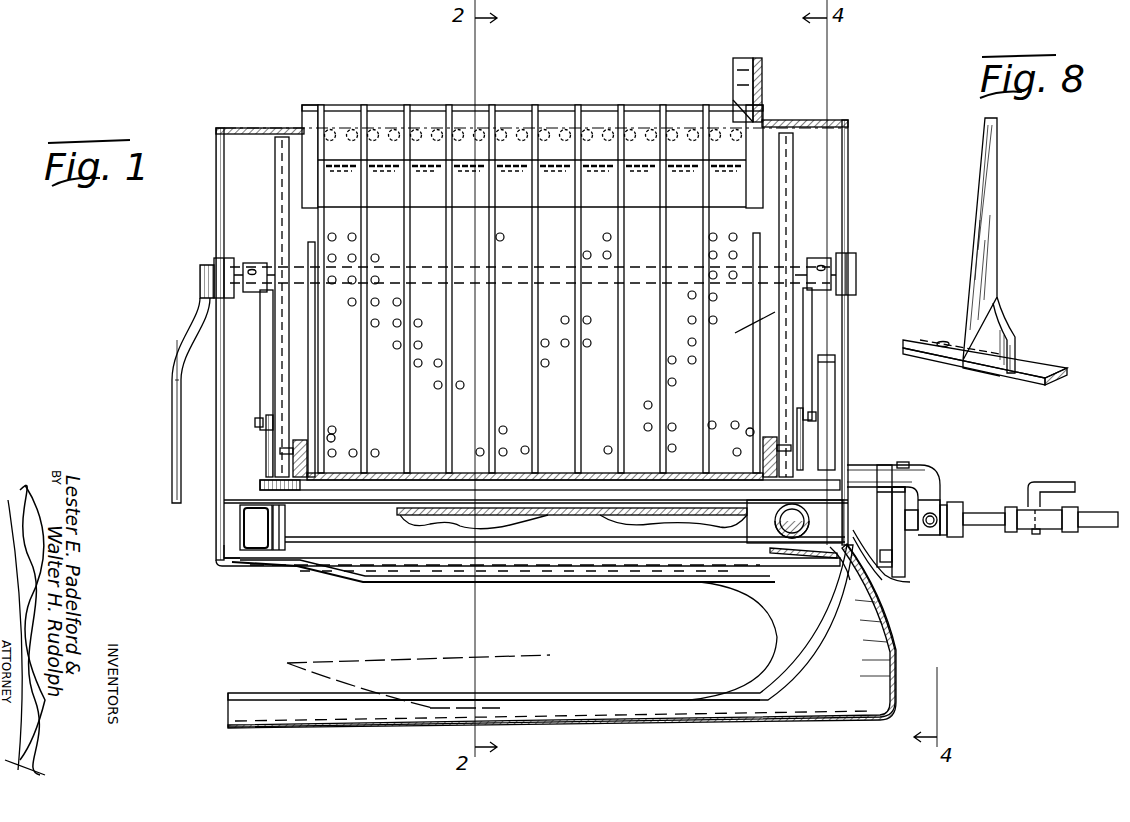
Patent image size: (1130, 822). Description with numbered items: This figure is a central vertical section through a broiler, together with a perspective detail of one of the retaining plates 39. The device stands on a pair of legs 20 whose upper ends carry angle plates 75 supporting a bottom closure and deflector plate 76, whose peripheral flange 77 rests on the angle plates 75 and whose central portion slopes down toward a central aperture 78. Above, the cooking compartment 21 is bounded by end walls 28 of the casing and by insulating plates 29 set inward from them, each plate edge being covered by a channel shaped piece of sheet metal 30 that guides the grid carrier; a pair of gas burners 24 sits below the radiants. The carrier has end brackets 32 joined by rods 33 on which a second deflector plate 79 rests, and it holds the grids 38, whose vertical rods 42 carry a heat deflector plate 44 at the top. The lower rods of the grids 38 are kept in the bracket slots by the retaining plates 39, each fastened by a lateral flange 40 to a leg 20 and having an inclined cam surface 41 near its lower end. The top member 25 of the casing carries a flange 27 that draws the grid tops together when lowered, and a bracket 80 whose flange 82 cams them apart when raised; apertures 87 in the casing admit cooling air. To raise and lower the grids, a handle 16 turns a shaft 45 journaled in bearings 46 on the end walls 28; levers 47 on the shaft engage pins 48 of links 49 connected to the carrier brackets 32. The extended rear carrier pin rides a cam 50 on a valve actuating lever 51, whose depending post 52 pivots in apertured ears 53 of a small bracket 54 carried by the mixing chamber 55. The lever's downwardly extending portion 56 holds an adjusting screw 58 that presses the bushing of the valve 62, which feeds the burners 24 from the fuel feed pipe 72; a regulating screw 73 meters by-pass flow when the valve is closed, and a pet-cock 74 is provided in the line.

In FIG. 1, the handle 16 is at (177, 358).
In FIG. 1, the legs 20 is at (897, 655).
In FIG. 1, the cooking compartment 21 is at (775, 312).
In FIG. 1, the gas burners 24 is at (572, 520).
In FIG. 1, the top member 25 is at (258, 128).
In FIG. 1, the flange 27 is at (644, 207).
In FIG. 1, the ends 28 is at (216, 206).
In FIG. 1, the plates 29 is at (280, 163).
In FIG. 1, the channel shaped piece of sheet metal 30 is at (275, 192).
In FIG. 1, the end brackets 32 is at (300, 440).
In FIG. 1, the rods 33 is at (552, 480).
In FIG. 1, the grids 38 is at (522, 94).
In FIG. 1, the retaining plates 39 is at (315, 330).
In FIG. 8, the retaining plates 39 is at (988, 210).
In FIG. 1, the lateral flange 40 is at (290, 503).
In FIG. 8, the lateral flange 40 is at (1050, 362).
In FIG. 1, the inclined cam surface 41 is at (748, 433).
In FIG. 8, the inclined cam surface 41 is at (1005, 318).
In FIG. 1, the vertical rods 42 is at (540, 312).
In FIG. 1, the heat deflector plate 44 is at (608, 90).
In FIG. 1, the shaft 45 is at (240, 270).
In FIG. 1, the bearings 46 is at (218, 263).
In FIG. 1, the levers 47 is at (262, 320).
In FIG. 1, the pin 48 is at (258, 418).
In FIG. 1, the link 49 is at (266, 440).
In FIG. 1, the cam 50 is at (835, 378).
In FIG. 1, the valve actuating lever 51 is at (918, 473).
In FIG. 1, the depending post 52 is at (893, 537).
In FIG. 1, the apertured ears 53 is at (850, 500).
In FIG. 1, the bracket 54 is at (880, 520).
In FIG. 1, the mixing chamber 55 is at (890, 580).
In FIG. 1, the downwardly extending portion 56 is at (935, 490).
In FIG. 1, the adjusting screw 58 is at (936, 527).
In FIG. 1, the valve 62 is at (958, 500).
In FIG. 1, the fuel feed pipe 72 is at (985, 513).
In FIG. 1, the regulating screw 73 is at (950, 535).
In FIG. 1, the pet-cock 74 is at (1040, 532).
In FIG. 1, the angle plates 75 is at (232, 560).
In FIG. 1, the bottom closure and deflector plate 76 is at (325, 572).
In FIG. 1, the peripheral flange 77 is at (800, 556).
In FIG. 1, the central aperture 78 is at (456, 582).
In FIG. 1, the second deflector plate 79 is at (420, 473).
In FIG. 1, the bracket 80 is at (762, 82).
In FIG. 1, the flange 82 is at (737, 70).
In FIG. 1, the apertures 87 is at (637, 128).